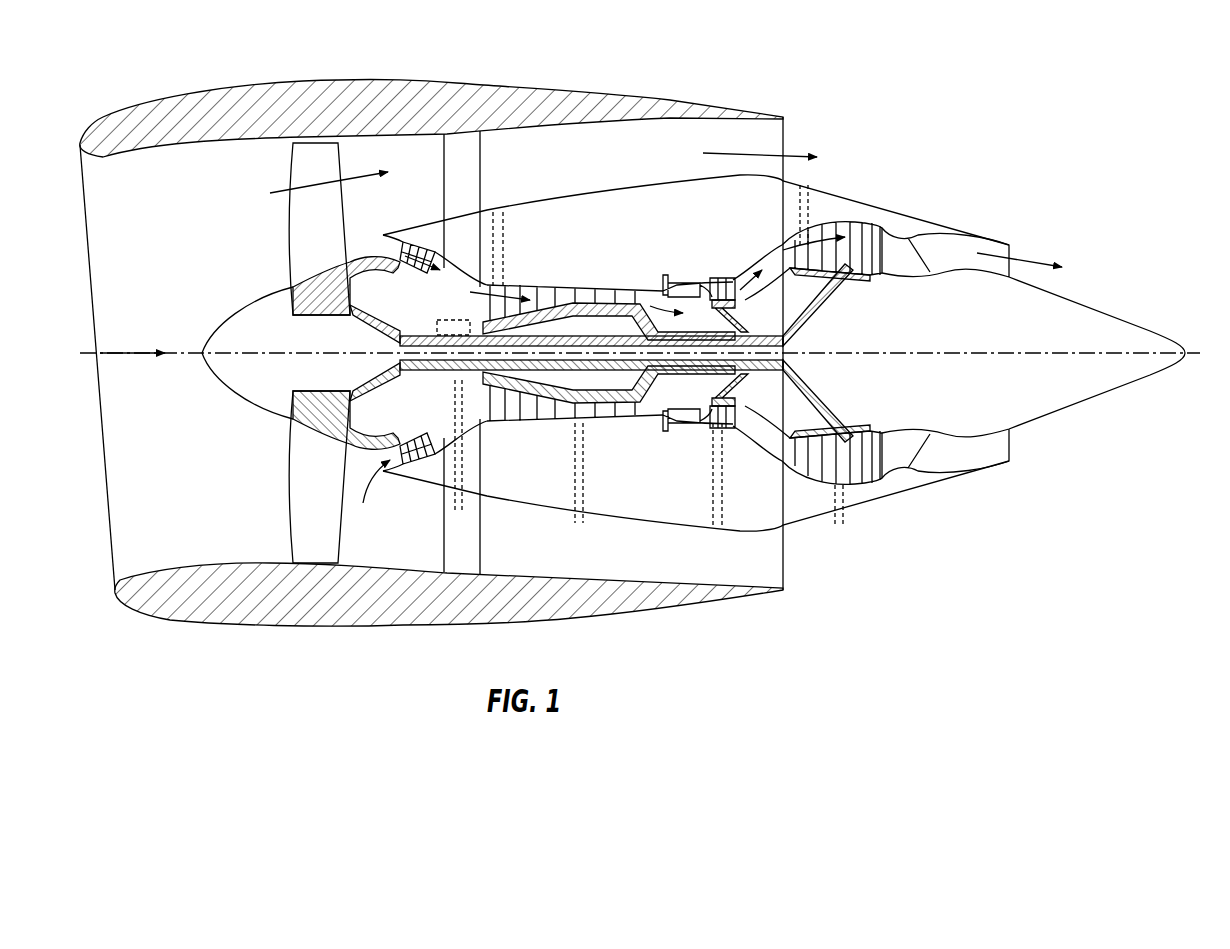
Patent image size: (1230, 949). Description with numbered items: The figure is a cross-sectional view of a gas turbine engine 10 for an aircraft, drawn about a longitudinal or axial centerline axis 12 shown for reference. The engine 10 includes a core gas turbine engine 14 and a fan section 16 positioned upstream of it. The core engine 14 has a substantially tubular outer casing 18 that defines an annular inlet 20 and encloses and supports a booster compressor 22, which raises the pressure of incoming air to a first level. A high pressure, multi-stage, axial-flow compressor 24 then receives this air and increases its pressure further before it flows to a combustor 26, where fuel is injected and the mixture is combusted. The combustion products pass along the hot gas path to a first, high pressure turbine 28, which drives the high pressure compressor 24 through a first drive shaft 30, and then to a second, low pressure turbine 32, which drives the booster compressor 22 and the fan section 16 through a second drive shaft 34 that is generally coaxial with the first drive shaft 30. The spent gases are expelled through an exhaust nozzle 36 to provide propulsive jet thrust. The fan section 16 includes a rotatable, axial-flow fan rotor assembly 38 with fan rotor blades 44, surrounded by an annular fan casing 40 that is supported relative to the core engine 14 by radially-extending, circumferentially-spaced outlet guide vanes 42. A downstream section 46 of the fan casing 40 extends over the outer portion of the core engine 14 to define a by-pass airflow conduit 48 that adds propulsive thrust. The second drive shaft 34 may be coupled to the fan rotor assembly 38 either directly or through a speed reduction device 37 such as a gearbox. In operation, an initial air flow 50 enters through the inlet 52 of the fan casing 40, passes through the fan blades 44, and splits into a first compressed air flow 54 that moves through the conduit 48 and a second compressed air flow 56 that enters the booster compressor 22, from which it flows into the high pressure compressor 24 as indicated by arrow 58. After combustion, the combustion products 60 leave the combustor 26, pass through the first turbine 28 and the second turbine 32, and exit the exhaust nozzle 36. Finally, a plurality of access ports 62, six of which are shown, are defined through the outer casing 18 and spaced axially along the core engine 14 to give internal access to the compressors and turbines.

The gas turbine engine 10 is at (925, 100).
The longitudinal or axial centerline axis 12 is at (952, 351).
The core gas turbine engine 14 is at (640, 233).
The fan section 16 is at (322, 62).
The outer casing 18 is at (640, 517).
The annular inlet 20 is at (370, 498).
The booster compressor 22 is at (450, 427).
The high pressure, multi-stage, axial-flow compressor 24 is at (512, 413).
The combustor 26 is at (683, 413).
The first (high pressure) turbine 28 is at (745, 412).
The first (high pressure) drive shaft 30 is at (712, 320).
The second (low pressure) turbine 32 is at (867, 487).
The second (low pressure) drive shaft 34 is at (450, 337).
The exhaust nozzle 36 is at (1013, 252).
The speed reduction device 37 is at (467, 437).
The fan rotor assembly 38 is at (357, 317).
The fan casing 40 is at (330, 628).
The outlet guide vanes 42 is at (485, 143).
The fan rotor blades 44 is at (293, 513).
The downstream section 46 is at (690, 102).
The by-pass airflow conduit 48 is at (590, 169).
The initial air flow 50 is at (108, 353).
The inlet 52 is at (113, 570).
The first compressed air flow 54 is at (303, 178).
The second compressed air flow 56 is at (368, 247).
The air flow entering high pressure compressor 58 is at (510, 293).
The combustion products 60 is at (720, 277).
The access ports 62 is at (513, 237).